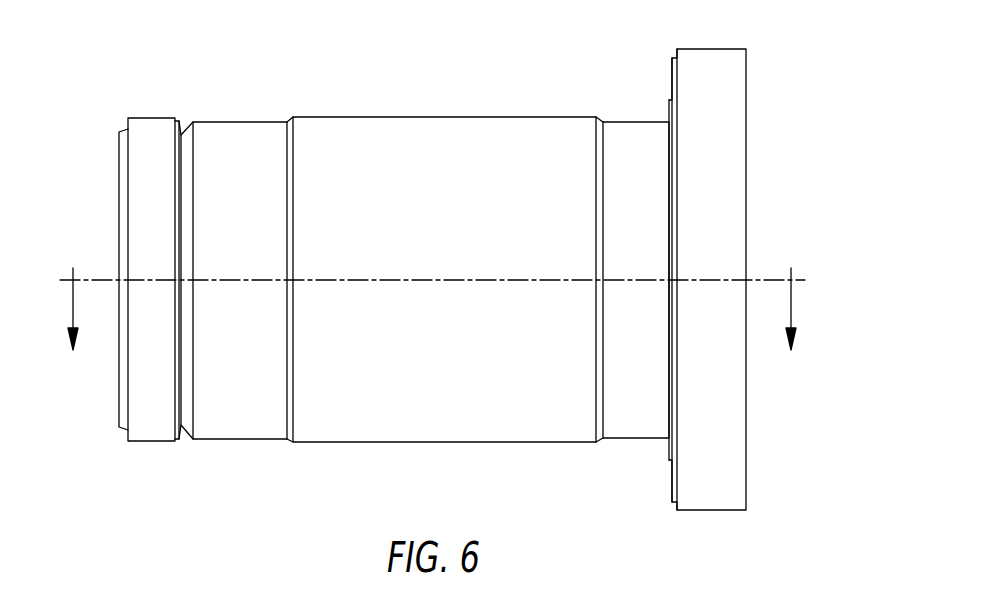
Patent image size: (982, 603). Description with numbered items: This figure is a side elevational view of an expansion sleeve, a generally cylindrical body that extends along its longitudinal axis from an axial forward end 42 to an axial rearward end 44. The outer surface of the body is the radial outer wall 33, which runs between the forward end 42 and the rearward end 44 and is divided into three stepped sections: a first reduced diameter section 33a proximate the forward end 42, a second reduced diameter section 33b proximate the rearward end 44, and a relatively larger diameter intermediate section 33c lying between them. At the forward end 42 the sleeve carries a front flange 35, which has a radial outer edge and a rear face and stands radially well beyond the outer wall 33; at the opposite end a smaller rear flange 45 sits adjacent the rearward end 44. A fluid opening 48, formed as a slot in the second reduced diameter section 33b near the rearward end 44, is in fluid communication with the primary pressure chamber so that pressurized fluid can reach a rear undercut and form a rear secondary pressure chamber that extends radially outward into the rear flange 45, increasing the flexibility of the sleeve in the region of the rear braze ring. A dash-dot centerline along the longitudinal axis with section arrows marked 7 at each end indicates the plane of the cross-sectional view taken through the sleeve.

The section line 7- 7 is at (432, 303).
The radial outer wall 33 is at (420, 244).
The first reduced diameter section 33a is at (627, 138).
The second reduced diameter section 33b is at (232, 137).
The intermediate section 33c is at (428, 137).
The front flange 35 is at (716, 64).
The axial forward end 42 is at (768, 386).
The axial rearward end 44 is at (99, 205).
The rear flange 45 is at (150, 135).
The fluid opening 48 is at (186, 130).